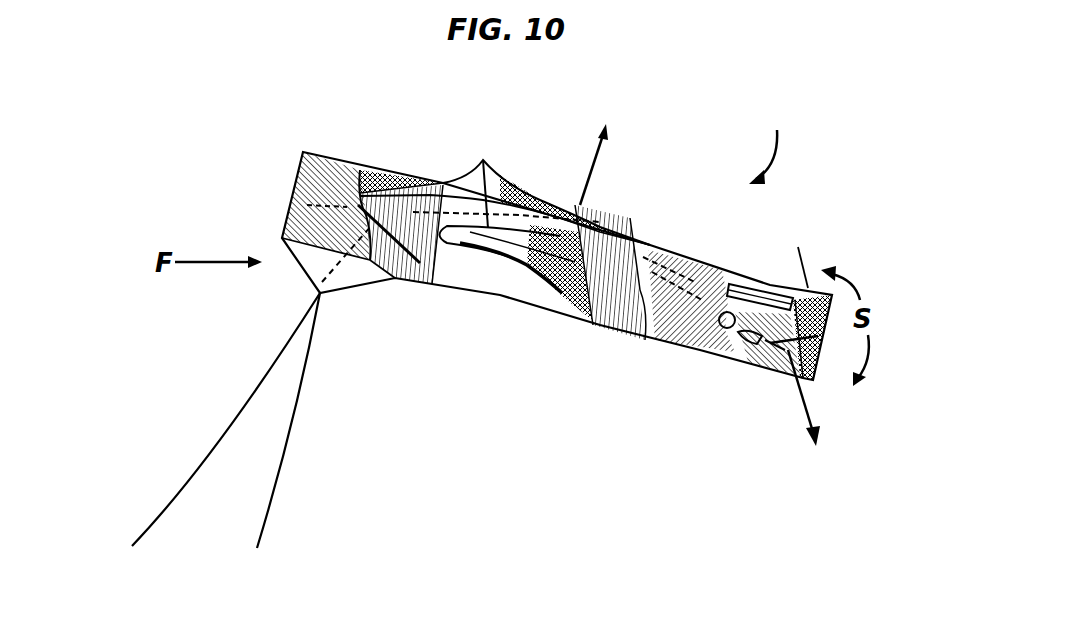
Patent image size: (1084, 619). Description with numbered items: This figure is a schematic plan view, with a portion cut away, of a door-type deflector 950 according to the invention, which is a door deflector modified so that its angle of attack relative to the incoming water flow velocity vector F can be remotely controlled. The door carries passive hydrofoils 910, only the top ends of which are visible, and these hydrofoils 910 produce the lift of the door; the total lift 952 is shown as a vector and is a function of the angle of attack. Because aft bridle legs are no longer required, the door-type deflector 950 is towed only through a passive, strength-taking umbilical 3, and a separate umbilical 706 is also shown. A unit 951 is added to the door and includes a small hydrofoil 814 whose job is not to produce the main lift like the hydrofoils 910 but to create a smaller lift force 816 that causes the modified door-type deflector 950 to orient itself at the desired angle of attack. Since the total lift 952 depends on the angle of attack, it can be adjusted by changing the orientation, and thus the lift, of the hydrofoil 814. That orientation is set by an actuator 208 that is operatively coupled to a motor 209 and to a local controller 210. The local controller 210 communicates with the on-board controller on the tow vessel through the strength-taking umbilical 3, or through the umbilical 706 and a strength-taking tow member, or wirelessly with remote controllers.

The strength-taking umbilical 3 is at (173, 502).
The umbilical 706 is at (281, 488).
The passive hydrofoil 910 is at (483, 162).
The total lift 952 is at (583, 177).
The door-type deflector 950 is at (775, 144).
The local controller 210 is at (750, 290).
The unit 951 is at (800, 252).
The motor 209 is at (727, 330).
The actuator 208 is at (745, 345).
The hydrofoil 814 is at (775, 347).
The lift force 816 is at (803, 393).